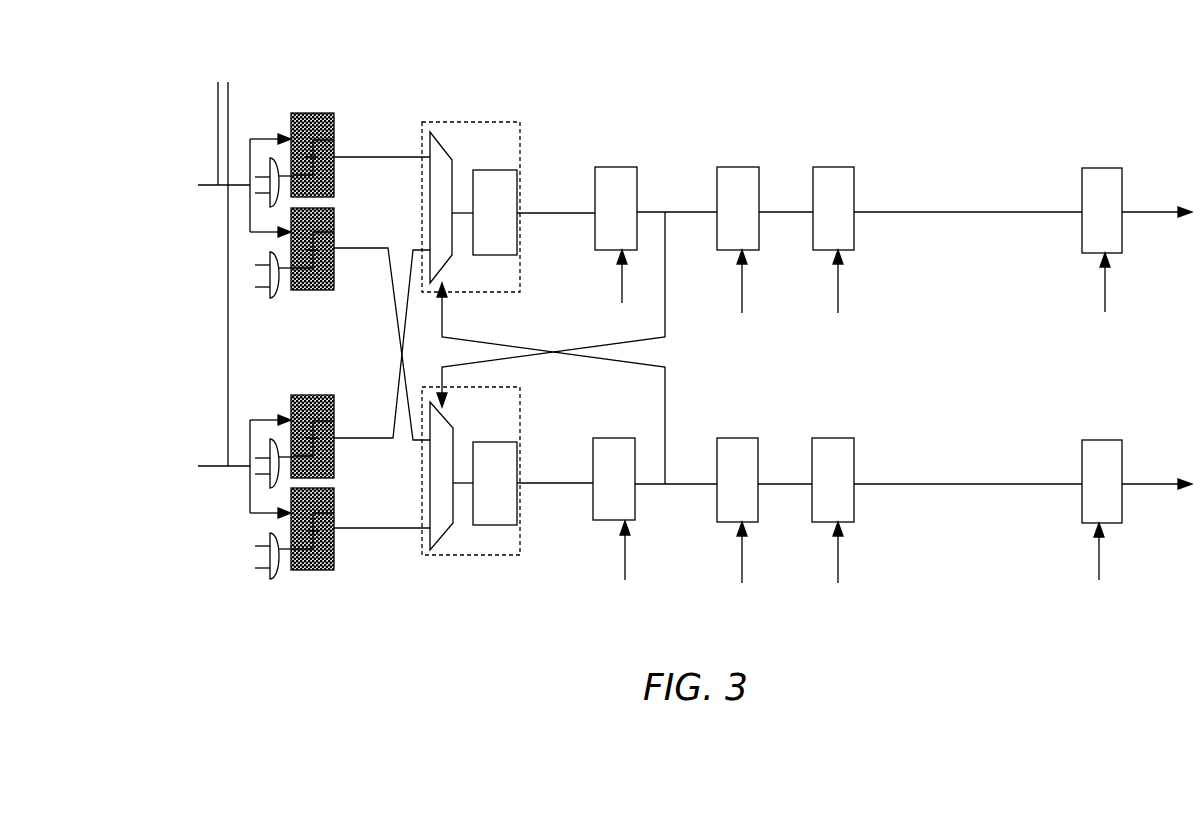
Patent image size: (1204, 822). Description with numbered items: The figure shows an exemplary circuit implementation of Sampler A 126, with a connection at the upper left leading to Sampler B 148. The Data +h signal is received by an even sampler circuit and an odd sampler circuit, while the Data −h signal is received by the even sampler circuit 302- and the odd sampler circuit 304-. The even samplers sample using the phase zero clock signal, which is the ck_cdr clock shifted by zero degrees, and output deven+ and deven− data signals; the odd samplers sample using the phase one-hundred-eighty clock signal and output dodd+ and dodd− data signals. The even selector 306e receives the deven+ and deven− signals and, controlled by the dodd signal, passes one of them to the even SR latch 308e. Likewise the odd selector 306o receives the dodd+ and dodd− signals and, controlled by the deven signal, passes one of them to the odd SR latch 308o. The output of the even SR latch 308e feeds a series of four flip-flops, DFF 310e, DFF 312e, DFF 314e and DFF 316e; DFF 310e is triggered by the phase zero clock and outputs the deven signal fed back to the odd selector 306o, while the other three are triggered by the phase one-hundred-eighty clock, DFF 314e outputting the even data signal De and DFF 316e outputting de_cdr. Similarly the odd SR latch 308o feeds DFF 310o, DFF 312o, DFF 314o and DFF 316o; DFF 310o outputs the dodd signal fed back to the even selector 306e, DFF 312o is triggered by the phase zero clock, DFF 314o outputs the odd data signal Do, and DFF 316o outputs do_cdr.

The Sampler A 126 is at (931, 643).
The Sampler B 148 is at (219, 250).
The even sampler circuit 302- is at (312, 420).
The odd sampler circuit 304- is at (312, 546).
The even selector 306e is at (441, 207).
The odd selector 306o is at (441, 476).
The even SR latch 308e is at (495, 226).
The odd SR latch 308o is at (495, 496).
The DFF 310e is at (616, 232).
The DFF 312e is at (738, 234).
The DFF 314e is at (833, 234).
The DFF 316e is at (1102, 236).
The DFF 310o is at (615, 503).
The DFF 312o is at (738, 501).
The DFF 314o is at (833, 501).
The DFF 316o is at (1102, 501).